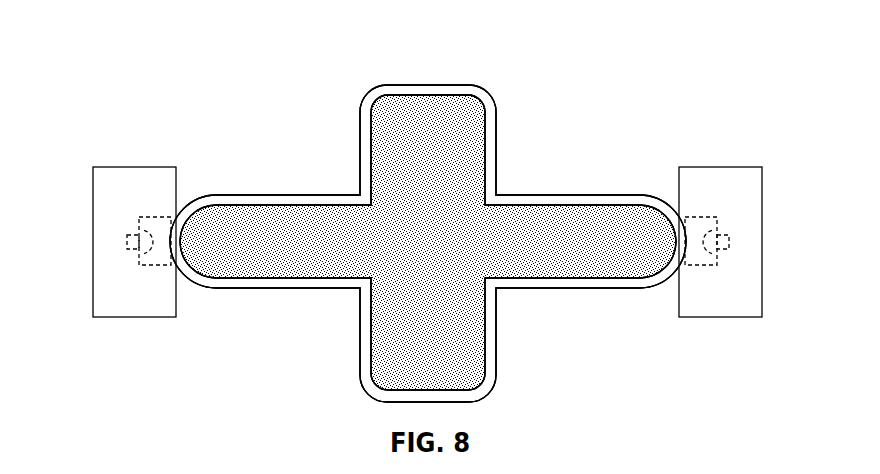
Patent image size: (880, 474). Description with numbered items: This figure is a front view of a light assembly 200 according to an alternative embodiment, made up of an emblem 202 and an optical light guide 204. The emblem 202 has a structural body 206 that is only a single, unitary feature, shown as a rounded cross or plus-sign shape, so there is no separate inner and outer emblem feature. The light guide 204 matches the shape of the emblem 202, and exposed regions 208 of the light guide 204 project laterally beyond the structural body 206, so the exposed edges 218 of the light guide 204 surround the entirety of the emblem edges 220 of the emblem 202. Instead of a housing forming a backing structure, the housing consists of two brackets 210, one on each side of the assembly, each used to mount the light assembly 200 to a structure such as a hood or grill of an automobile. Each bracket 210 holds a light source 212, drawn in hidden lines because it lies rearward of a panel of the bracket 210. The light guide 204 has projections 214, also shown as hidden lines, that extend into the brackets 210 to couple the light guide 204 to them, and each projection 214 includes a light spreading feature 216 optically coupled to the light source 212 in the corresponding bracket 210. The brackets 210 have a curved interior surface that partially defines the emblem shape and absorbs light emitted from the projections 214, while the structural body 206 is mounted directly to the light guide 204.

The light assembly 200 is at (243, 68).
The emblem 202 is at (451, 100).
The optical light guide 204 is at (376, 107).
The structural body 206 is at (420, 122).
The exposed regions 208 is at (476, 98).
The bracket 210 is at (117, 178).
The light source 212 is at (127, 243).
The projections 214 is at (163, 266).
The light spreading feature 216 is at (143, 258).
The exposed edges 218 is at (498, 148).
The emblem edges 220 is at (486, 183).